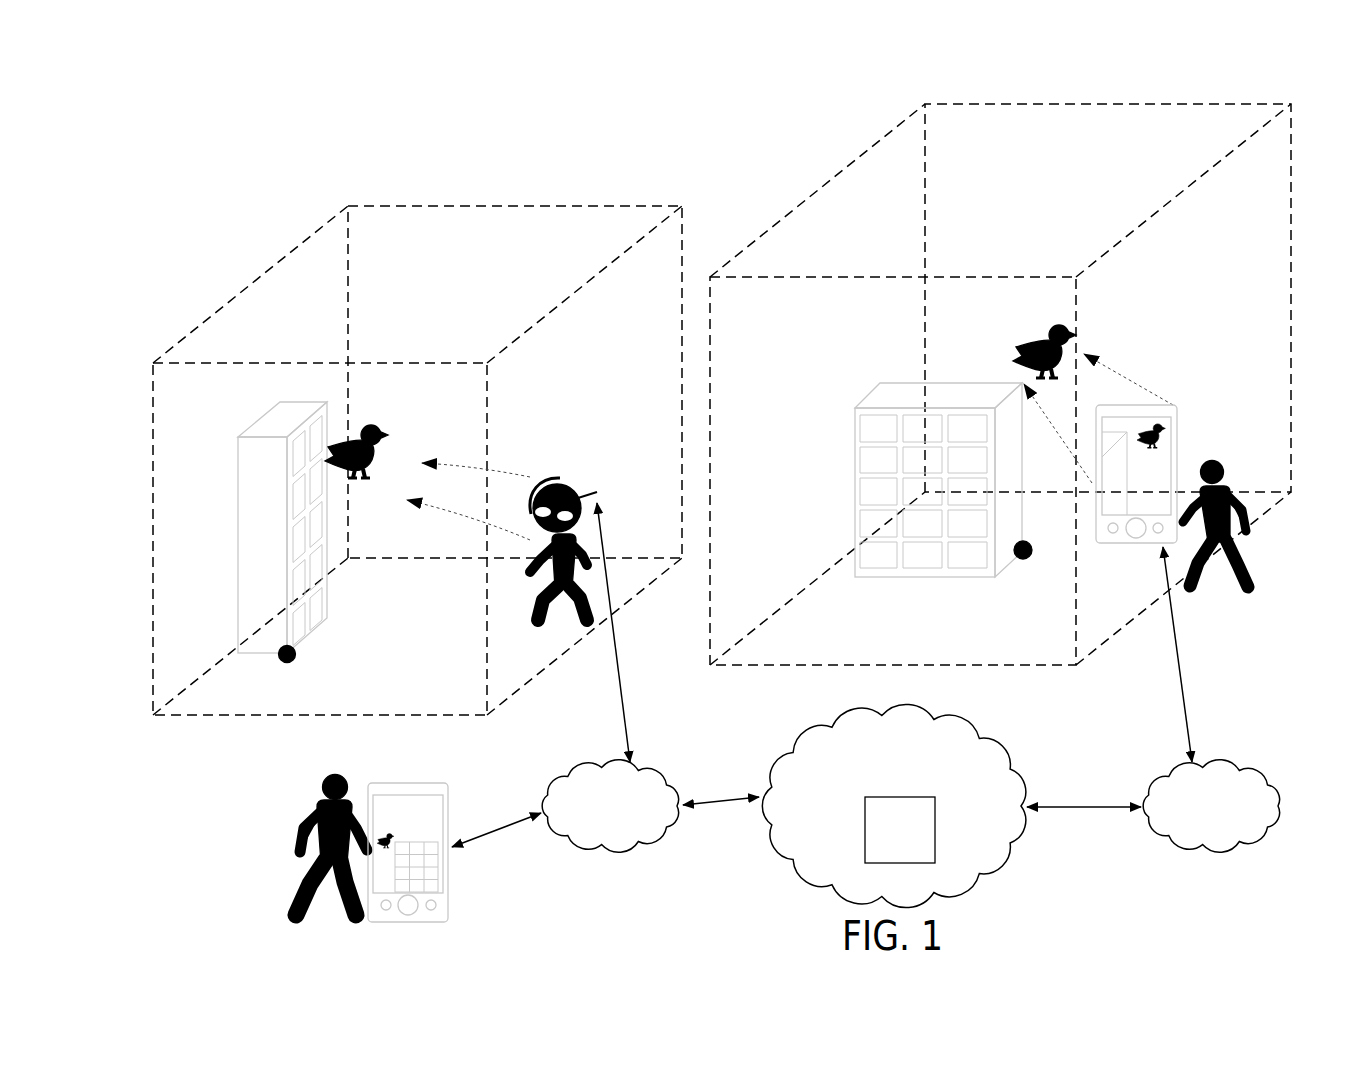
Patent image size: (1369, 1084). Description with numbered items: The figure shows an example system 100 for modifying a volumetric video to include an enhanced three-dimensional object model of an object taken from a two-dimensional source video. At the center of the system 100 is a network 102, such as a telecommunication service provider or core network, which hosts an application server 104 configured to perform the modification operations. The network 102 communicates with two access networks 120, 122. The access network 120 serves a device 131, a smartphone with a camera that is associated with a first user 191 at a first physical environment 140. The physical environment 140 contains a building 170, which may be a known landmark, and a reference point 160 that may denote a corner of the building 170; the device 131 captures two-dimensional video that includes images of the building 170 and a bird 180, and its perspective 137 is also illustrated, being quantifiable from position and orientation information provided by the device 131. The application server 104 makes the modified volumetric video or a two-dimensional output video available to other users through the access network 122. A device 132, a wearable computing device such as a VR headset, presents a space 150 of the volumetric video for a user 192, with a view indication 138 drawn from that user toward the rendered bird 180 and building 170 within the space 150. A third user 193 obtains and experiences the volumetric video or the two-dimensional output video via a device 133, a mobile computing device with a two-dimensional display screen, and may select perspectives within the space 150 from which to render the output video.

The system 100 is at (170, 75).
The network 102 is at (880, 785).
The application server 104 is at (885, 855).
The access network 120 is at (1198, 832).
The access network 122 is at (597, 841).
The device 131 is at (1142, 547).
The device 132 is at (600, 491).
The device 133 is at (450, 870).
The perspective 137 is at (1121, 377).
The field of view indication 138 is at (513, 473).
The physical environment 140 is at (1291, 298).
The space 150 is at (615, 206).
The reference point 160 is at (294, 660).
The building 170 is at (318, 627).
The bird 180 is at (383, 422).
The first user 191 is at (1253, 587).
The user 192 is at (588, 625).
The third user 193 is at (292, 917).